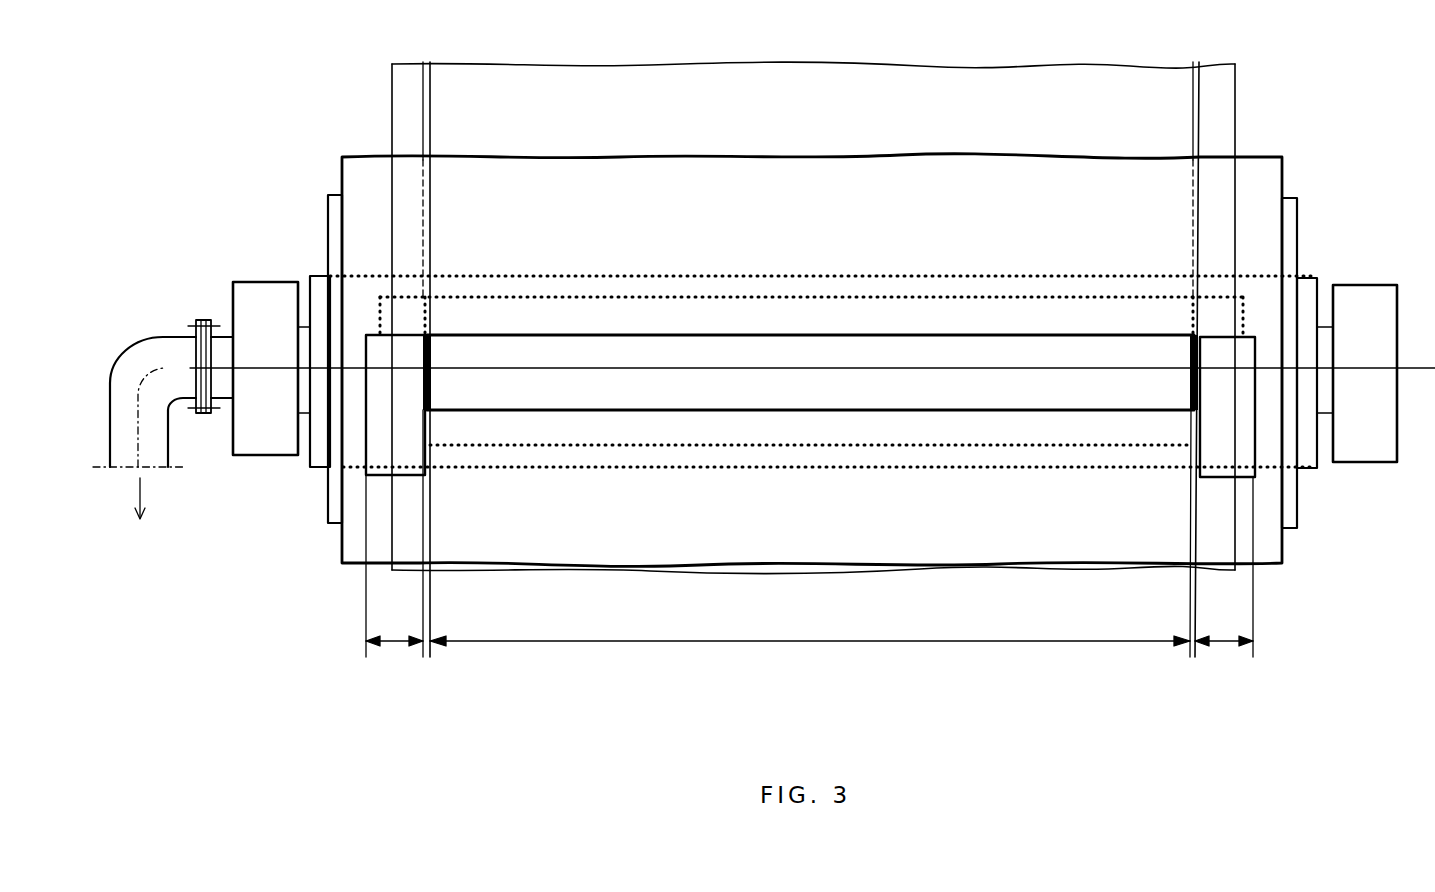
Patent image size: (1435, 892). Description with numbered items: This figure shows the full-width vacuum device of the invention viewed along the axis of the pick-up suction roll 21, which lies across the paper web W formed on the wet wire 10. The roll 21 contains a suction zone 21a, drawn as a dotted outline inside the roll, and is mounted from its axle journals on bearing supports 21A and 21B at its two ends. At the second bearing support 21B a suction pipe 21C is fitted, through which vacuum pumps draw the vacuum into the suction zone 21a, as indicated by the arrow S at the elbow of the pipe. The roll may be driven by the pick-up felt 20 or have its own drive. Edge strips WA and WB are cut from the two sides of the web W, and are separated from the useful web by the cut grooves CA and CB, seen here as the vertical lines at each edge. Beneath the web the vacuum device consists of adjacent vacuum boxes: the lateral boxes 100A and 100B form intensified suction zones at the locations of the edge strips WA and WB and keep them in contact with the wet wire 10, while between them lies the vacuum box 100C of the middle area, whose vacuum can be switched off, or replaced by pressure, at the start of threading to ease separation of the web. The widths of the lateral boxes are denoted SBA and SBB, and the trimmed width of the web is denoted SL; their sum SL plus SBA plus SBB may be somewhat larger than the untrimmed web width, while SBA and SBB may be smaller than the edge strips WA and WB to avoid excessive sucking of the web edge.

The wet wire 10 is at (1262, 165).
The pick-up felt 20 is at (1300, 200).
The pick-up suction roll 21 is at (1307, 288).
The suction zone 21a is at (772, 295).
The bearing support 21A is at (1375, 302).
The second bearing support 21B is at (266, 300).
The suction pipe 21C is at (165, 350).
The arrow S is at (145, 488).
The paper web W is at (990, 78).
The edge strip WA is at (1226, 73).
The edge strip WB is at (400, 100).
The cut groove CA is at (1197, 62).
The cut groove CB is at (425, 64).
The vacuum box 100A is at (1237, 452).
The vacuum box 100B is at (395, 428).
The vacuum box of the middle area 100C is at (922, 398).
The trimmed width of the web SL is at (823, 641).
The width of vacuum box 100A SBA is at (1223, 641).
The width of vacuum box 100B SBB is at (393, 641).